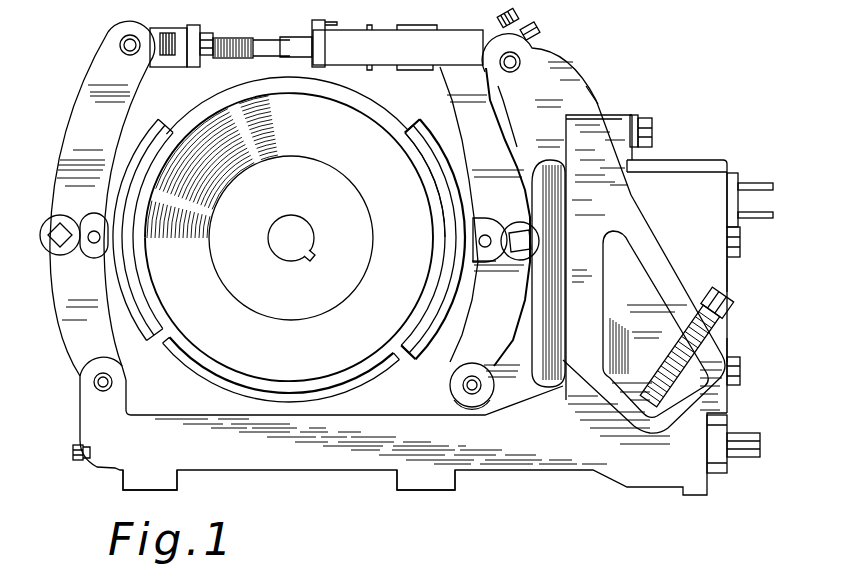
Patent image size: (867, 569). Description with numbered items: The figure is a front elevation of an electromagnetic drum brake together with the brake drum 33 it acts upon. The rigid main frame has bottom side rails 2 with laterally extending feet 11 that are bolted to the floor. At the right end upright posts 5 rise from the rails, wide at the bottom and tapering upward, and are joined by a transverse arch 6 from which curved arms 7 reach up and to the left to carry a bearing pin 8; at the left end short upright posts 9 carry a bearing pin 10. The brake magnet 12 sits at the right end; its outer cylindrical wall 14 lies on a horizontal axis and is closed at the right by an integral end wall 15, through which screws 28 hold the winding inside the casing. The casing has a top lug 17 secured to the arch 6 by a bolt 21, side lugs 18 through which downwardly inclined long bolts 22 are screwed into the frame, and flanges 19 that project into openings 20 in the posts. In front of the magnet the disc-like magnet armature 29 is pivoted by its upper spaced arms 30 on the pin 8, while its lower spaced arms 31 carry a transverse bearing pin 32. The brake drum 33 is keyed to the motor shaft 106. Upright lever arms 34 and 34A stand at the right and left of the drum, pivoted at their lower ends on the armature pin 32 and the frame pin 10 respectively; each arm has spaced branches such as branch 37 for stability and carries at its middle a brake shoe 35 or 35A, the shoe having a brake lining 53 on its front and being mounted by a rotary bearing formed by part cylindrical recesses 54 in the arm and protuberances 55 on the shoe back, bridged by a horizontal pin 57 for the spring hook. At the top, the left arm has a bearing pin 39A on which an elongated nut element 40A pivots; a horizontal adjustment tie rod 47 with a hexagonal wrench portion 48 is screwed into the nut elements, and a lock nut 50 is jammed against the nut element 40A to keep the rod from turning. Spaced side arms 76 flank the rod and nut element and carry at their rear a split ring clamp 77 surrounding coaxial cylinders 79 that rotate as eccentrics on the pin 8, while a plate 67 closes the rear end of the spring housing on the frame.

The bottom side rails 2 is at (303, 462).
The upright posts 5 is at (653, 262).
The transverse arch 6 is at (590, 113).
The curved arms 7 is at (562, 63).
The bearing pin 8 is at (513, 63).
The short upright posts 9 is at (127, 399).
The bearing pin 10 is at (112, 382).
The feet 11 is at (177, 483).
The brake magnet 12 is at (736, 275).
The outer cylindrical wall 14 is at (703, 163).
The end wall 15 is at (730, 350).
The lug 17 is at (628, 117).
The side lugs 18 is at (728, 333).
The flanges 19 is at (612, 346).
The openings 20 is at (603, 320).
The bolt 21 is at (652, 128).
The long bolts 22 is at (728, 308).
The screws 28 is at (740, 244).
The magnet armature 29 is at (552, 230).
The spaced arms 30 is at (573, 82).
The spaced arms 31 is at (467, 403).
The bearing pin 32 is at (462, 390).
The brake drum 33 is at (247, 388).
The lever arm 34 is at (463, 350).
The lever arm 34A is at (78, 342).
The brake shoe 35 is at (435, 138).
The brake shoe 35A is at (157, 127).
The arm branch 37 is at (485, 237).
The bearing pin 39A is at (120, 45).
The elongated nut element 40A is at (182, 30).
The adjustment tie rod 47 is at (300, 40).
The hexagonal portion 48 is at (263, 40).
The lock nut 50 is at (208, 57).
The brake lining 53 is at (413, 128).
The part cylindrical recess 54 is at (508, 230).
The part cylindrical protuberances 55 is at (485, 263).
The horizontal pin 57 is at (483, 217).
The plate 67 is at (717, 475).
The side arms 76 is at (418, 57).
The split ring clamp 77 is at (530, 26).
The coaxial cylinders 79 is at (499, 17).
The shaft 106 is at (271, 238).